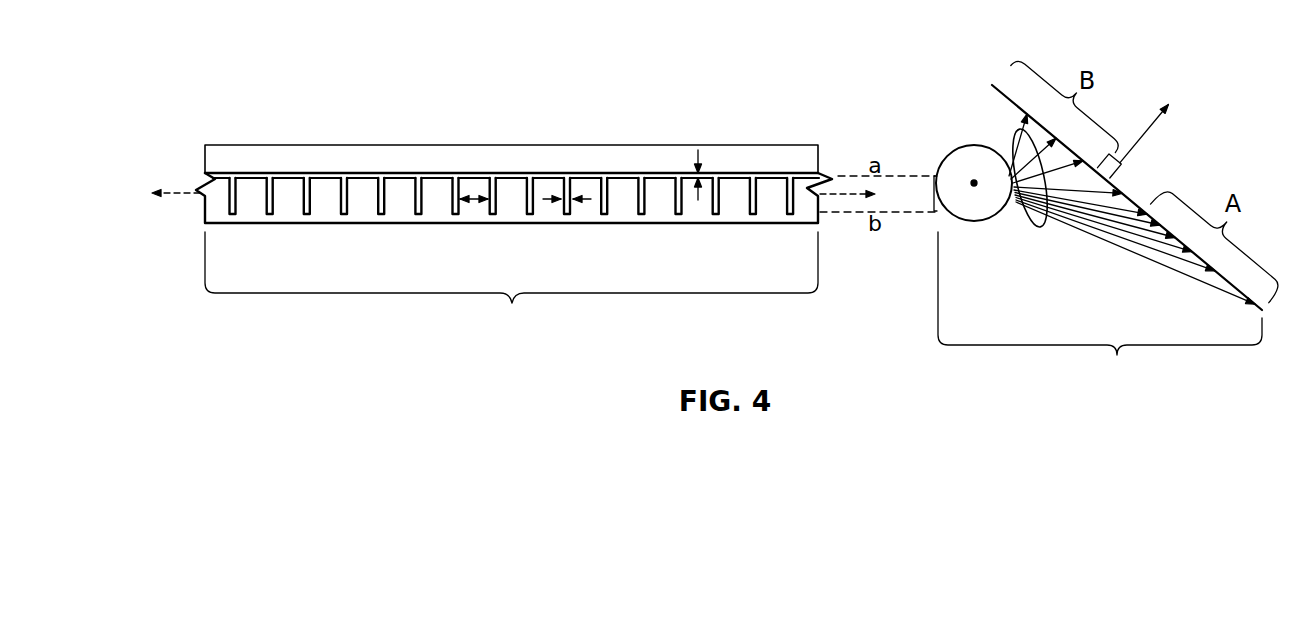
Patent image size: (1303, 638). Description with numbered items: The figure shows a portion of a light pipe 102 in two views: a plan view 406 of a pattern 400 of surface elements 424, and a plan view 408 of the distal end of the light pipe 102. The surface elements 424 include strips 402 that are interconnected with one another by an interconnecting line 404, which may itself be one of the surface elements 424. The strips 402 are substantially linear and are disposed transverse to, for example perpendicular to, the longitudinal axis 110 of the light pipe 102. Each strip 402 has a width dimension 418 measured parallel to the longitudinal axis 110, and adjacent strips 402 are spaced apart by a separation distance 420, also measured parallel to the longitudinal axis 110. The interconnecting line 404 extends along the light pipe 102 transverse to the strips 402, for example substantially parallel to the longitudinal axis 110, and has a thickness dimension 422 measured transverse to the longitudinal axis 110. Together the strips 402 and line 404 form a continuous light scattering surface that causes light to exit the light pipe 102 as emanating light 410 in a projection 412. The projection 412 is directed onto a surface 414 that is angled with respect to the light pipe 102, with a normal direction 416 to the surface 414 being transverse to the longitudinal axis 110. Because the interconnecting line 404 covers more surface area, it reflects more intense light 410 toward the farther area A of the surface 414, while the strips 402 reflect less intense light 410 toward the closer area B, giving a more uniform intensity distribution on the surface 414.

The light pipe 102 is at (254, 152).
The longitudinal axis 110 is at (183, 191).
The pattern 400 is at (585, 171).
The strips 402 is at (263, 204).
The interconnecting line 404 is at (326, 177).
The plan view 406 is at (511, 283).
The plan view 408 is at (1100, 309).
The emanating light 410 is at (1141, 258).
The projection 412 is at (1037, 222).
The surface 414 is at (1007, 98).
The normal direction 416 is at (1151, 125).
The width dimension 418 is at (585, 202).
The separation distance 420 is at (474, 202).
The thickness dimension 422 is at (700, 152).
The surface elements 424 is at (389, 180).